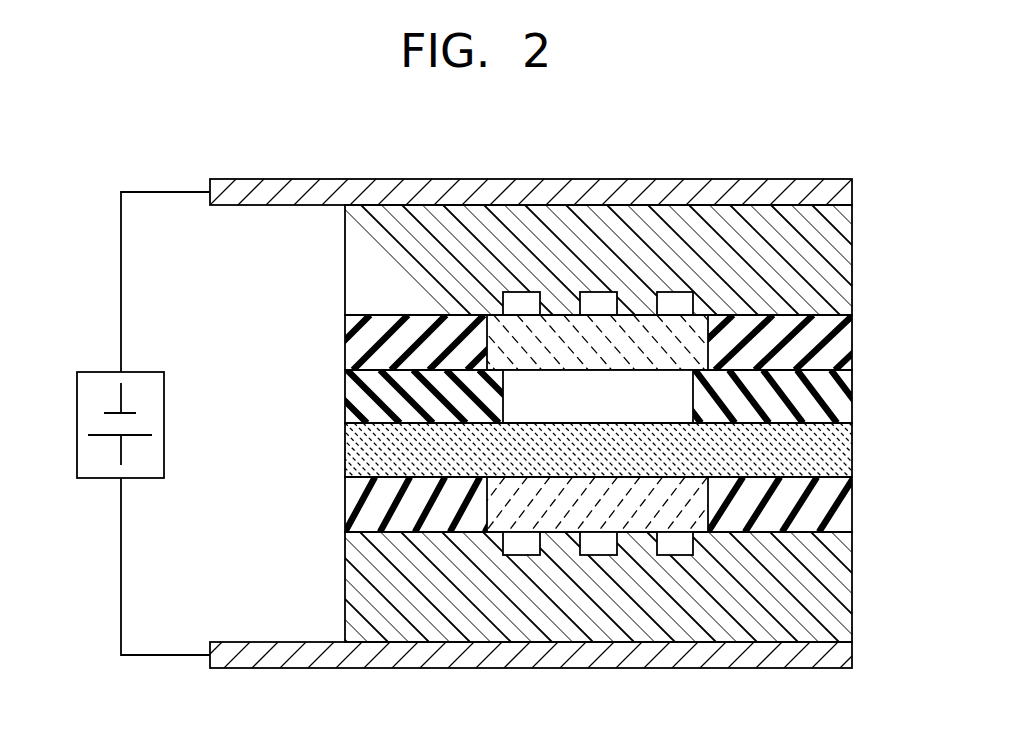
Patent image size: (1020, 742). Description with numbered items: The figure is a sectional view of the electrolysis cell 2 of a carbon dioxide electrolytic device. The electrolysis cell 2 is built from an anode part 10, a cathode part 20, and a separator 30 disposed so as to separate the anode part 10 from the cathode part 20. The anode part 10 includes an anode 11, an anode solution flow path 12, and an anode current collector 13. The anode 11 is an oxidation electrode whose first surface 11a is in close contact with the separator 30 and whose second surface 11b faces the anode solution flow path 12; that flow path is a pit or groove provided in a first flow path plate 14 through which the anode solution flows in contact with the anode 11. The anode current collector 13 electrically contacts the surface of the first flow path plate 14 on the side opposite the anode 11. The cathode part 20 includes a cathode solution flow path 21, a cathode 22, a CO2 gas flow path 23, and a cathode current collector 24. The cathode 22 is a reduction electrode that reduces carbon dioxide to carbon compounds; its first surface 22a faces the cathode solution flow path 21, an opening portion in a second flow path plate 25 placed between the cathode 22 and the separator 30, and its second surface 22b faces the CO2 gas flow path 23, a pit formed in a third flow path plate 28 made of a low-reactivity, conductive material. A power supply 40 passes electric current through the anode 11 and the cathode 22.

The electrolysis cell 2 is at (730, 164).
The anode part 10 is at (871, 477).
The anode 11 is at (503, 508).
The first surface 11a is at (487, 476).
The second surface 11b is at (500, 533).
The anode solution flow path 12 is at (518, 545).
The anode current collector 13 is at (296, 668).
The first flow path plate 14 is at (345, 612).
The cathode part 20 is at (871, 180).
The cathode solution flow path 21 is at (510, 396).
The cathode 22 is at (500, 345).
The first surface 22a is at (487, 371).
The second surface 22b is at (487, 313).
The CO2 gas flow path 23 is at (516, 292).
The cathode current collector 24 is at (322, 179).
The second flow path plate 25 is at (345, 398).
The third flow path plate 28 is at (345, 262).
The separator 30 is at (835, 452).
The power supply 40 is at (164, 398).